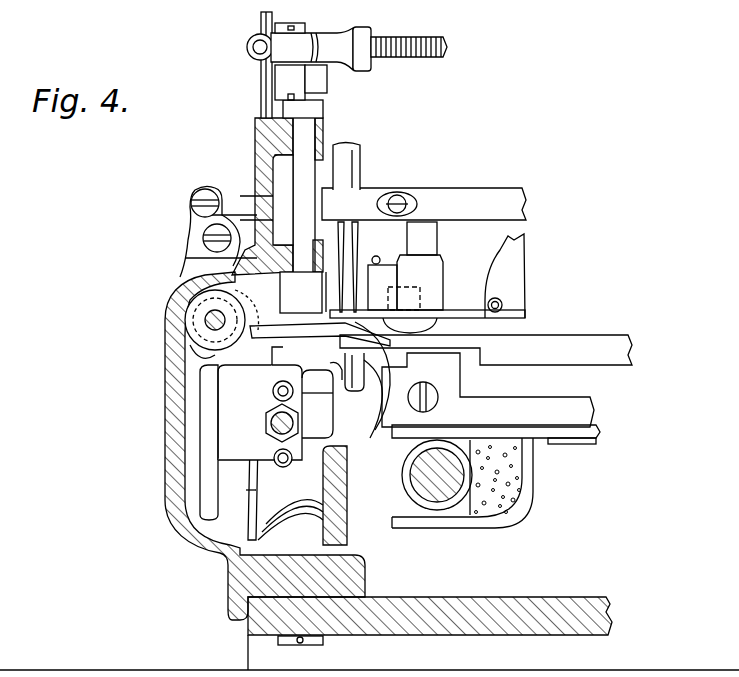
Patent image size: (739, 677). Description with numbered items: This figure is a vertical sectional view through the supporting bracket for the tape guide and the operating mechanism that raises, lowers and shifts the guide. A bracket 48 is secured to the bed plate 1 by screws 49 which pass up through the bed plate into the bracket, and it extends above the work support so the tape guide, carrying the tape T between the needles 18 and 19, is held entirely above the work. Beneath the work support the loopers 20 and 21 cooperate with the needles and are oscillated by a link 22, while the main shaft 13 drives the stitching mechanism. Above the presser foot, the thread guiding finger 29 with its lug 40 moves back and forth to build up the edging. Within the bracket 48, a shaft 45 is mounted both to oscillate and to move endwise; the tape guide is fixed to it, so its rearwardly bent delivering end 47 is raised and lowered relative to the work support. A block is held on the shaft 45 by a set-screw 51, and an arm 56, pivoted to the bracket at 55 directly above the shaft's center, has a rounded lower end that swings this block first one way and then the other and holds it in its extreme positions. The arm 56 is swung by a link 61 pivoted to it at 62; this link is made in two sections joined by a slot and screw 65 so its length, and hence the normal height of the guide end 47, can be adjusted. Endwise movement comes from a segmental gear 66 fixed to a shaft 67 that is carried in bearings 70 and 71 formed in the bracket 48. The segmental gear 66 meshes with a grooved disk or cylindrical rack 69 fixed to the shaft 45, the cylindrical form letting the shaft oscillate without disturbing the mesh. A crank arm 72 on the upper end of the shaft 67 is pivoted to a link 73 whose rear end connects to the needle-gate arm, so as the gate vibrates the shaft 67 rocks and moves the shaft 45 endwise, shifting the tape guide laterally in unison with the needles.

The bed plate 1 is at (448, 620).
The main shaft 13 is at (418, 482).
The needle 18 is at (405, 250).
The needle 19 is at (443, 276).
The looper 20 is at (280, 403).
The looper 21 is at (361, 388).
The link 22 is at (268, 423).
The thread guiding finger 29 is at (371, 385).
The lug 40 is at (422, 298).
The shaft 45 is at (182, 342).
The rearwardly bent lower end of the tape guide 47 is at (268, 360).
The bracket 48 is at (262, 160).
The screws 49 is at (312, 646).
The set-screw 51 is at (314, 434).
The pivot 55 is at (203, 240).
The arm 56 is at (190, 258).
The link 61 is at (236, 205).
The pivot 62 is at (191, 200).
The slot and screw 65 is at (398, 198).
The segmental gear 66 is at (303, 292).
The shaft 67 is at (258, 180).
The grooved disk or cylindrical rack 69 is at (205, 306).
The bearing 70 is at (342, 258).
The bearing 71 is at (323, 136).
The crank arm 72 is at (320, 72).
The link 73 is at (405, 44).
The tape T is at (258, 23).